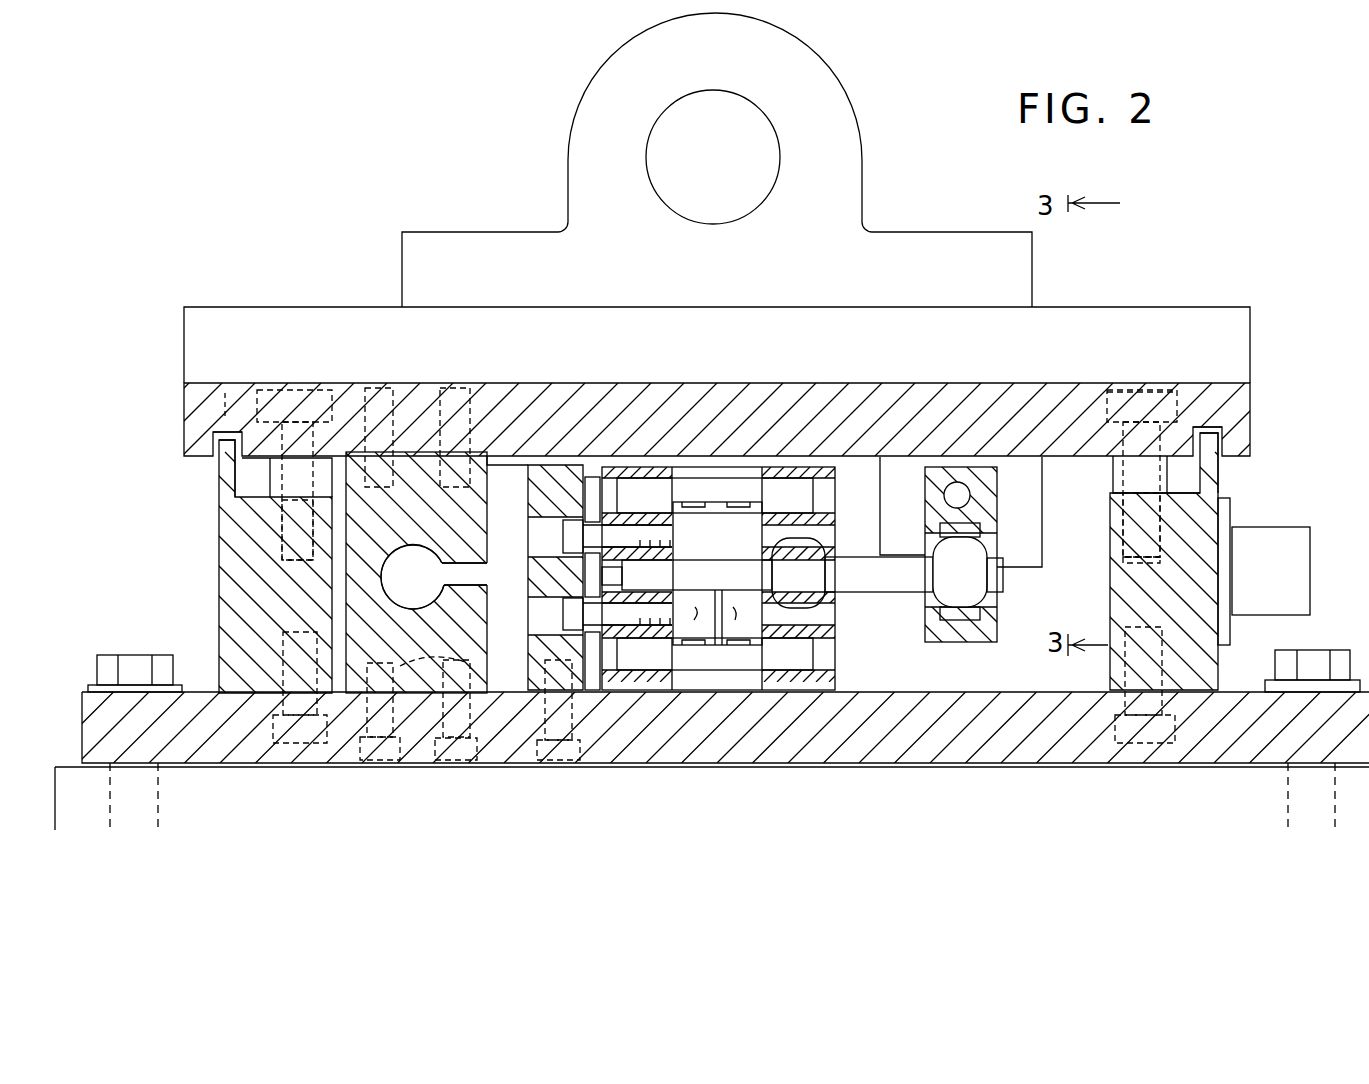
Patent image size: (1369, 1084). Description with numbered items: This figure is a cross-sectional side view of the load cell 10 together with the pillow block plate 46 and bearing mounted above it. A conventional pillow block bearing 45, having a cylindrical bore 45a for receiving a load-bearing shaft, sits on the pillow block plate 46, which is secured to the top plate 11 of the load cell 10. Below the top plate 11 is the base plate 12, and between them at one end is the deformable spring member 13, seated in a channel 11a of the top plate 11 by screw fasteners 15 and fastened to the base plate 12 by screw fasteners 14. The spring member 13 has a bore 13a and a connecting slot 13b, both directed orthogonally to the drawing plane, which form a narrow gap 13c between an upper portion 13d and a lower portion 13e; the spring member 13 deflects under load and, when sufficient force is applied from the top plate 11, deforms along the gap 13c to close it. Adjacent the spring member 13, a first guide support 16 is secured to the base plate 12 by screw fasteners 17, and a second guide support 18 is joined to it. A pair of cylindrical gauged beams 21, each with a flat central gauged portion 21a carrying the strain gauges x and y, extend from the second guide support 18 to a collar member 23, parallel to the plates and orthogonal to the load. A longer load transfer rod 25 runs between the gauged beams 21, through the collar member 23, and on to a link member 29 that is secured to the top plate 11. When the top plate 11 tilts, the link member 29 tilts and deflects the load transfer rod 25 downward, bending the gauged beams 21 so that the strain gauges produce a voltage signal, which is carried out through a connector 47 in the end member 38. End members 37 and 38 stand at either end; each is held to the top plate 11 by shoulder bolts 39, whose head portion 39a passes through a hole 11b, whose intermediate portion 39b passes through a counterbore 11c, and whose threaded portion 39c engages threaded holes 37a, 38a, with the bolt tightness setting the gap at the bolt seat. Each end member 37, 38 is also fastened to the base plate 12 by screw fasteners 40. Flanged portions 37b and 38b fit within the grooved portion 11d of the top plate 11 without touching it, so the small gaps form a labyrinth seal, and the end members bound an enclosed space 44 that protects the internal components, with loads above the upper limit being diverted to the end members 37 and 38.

The load cell 10 is at (1342, 478).
The top plate 11 is at (1250, 395).
The channel 11a is at (488, 463).
The holes 11b is at (232, 392).
The counterbores 11c is at (213, 432).
The grooved portion 11d is at (1222, 440).
The base plate 12 is at (1362, 690).
The deformable spring member 13 is at (420, 694).
The bore 13a is at (415, 578).
The slot 13b is at (460, 561).
The narrow gap 13c is at (508, 575).
The upper portion 13d is at (415, 577).
The lower portion 13e is at (465, 662).
The screw fasteners 14 is at (382, 755).
The screw fasteners 15 is at (435, 386).
The first guide support 16 is at (560, 465).
The screw fasteners 17 is at (562, 745).
The second guide support 18 is at (622, 470).
The gauged beams 21 is at (713, 690).
The gauged portion 21a is at (717, 573).
The collar member 23 is at (812, 690).
The load transfer rod 25 is at (856, 592).
The link member 29 is at (960, 660).
The end member 37 is at (219, 608).
The threaded holes 37a is at (290, 545).
The flanged portion 37b is at (219, 472).
The end member 38 is at (1218, 530).
The threaded holes 38a is at (1125, 570).
The flanged portion 38b is at (1218, 478).
The shoulder bolts 39 is at (262, 390).
The head portion 39a is at (1110, 395).
The intermediate portion 39b is at (1113, 475).
The threaded portion 39c is at (1120, 533).
The screw fasteners 40 is at (300, 745).
The enclosed space 44 is at (1013, 673).
The pillow block bearing 45 is at (822, 58).
The cylindrical bore 45a is at (779, 163).
The pillow block plate 46 is at (1100, 307).
The connector 47 is at (1310, 592).